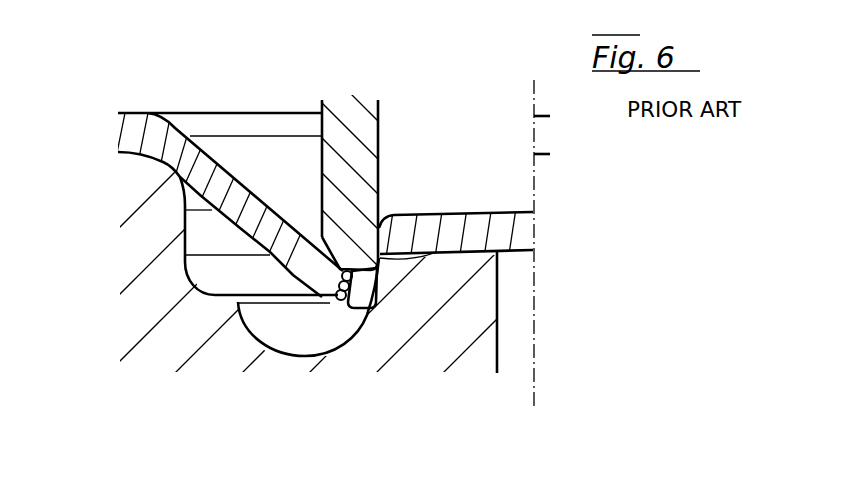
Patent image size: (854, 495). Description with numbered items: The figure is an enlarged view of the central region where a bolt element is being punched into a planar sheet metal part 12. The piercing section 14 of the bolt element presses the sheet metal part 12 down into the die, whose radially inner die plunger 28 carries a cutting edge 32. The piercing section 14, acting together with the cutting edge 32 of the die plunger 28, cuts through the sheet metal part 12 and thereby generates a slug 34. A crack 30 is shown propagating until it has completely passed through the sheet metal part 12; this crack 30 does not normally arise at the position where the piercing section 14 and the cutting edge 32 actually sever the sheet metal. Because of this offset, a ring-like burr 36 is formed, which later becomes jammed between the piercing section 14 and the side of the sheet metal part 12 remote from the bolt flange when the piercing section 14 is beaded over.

The sheet metal part 12 is at (120, 136).
The piercing section 14 is at (306, 185).
The die plunger 28 is at (538, 284).
The crack 30 is at (330, 315).
The cutting edge 32 is at (392, 276).
The slug 34 is at (497, 201).
The ring-like burr 36 is at (356, 334).